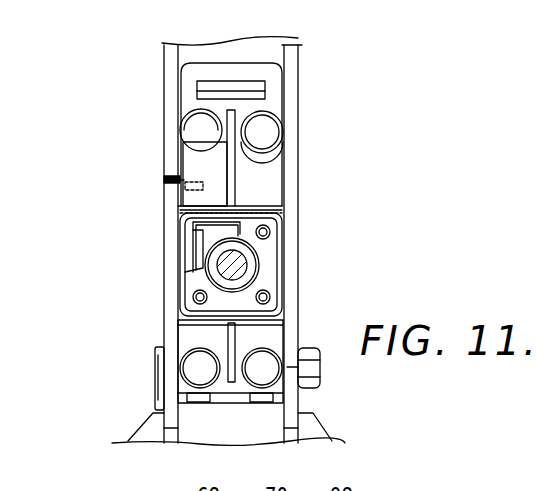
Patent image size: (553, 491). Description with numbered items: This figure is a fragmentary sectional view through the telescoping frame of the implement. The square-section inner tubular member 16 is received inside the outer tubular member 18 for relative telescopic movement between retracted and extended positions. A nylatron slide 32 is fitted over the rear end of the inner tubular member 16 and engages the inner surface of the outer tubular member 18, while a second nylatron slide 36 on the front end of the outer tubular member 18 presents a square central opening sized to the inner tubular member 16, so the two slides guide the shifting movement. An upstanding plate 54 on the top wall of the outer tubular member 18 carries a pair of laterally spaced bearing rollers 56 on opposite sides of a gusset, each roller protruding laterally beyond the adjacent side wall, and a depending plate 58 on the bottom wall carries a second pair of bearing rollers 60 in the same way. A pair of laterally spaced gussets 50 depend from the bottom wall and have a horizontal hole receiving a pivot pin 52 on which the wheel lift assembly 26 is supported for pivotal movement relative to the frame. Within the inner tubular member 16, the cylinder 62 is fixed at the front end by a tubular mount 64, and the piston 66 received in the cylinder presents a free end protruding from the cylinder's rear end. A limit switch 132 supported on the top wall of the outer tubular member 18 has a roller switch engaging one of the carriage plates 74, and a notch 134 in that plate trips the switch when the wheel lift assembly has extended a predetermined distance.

The inner tubular frame member 16 is at (197, 243).
The outer tubular frame member 18 is at (282, 232).
The wheel lift assembly 26 is at (327, 427).
The nylatron slide 32 is at (267, 257).
The nylatron slide 36 is at (185, 230).
The gussets 50 is at (265, 400).
The pivot pin 52 is at (322, 368).
The upstanding plate 54 is at (262, 72).
The bearing rollers 56 is at (195, 120).
The depending plate 58 is at (188, 337).
The second pair of bearing rollers 60 is at (192, 375).
The cylinder 62 is at (250, 267).
The tubular mount 64 is at (210, 258).
The piston 66 is at (218, 268).
The carriage plates 74 is at (170, 58).
The limit switch 132 is at (192, 164).
The notch 134 is at (166, 182).